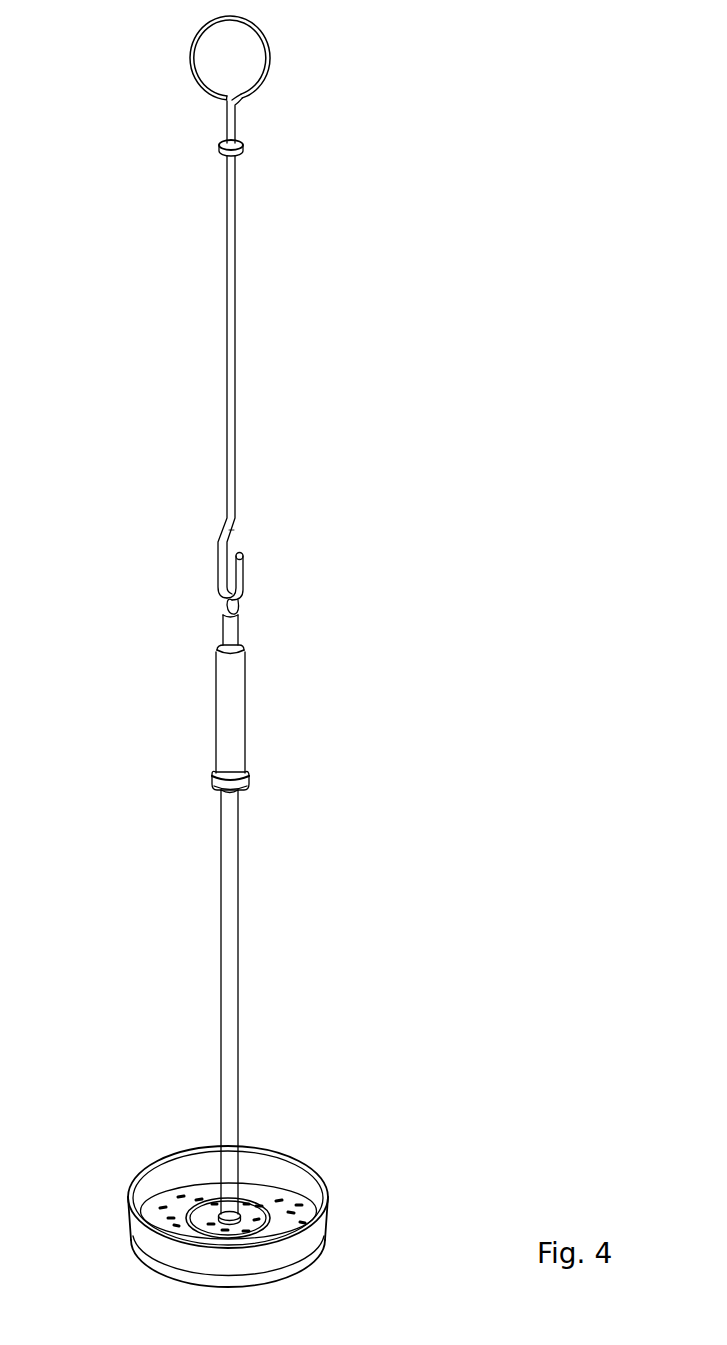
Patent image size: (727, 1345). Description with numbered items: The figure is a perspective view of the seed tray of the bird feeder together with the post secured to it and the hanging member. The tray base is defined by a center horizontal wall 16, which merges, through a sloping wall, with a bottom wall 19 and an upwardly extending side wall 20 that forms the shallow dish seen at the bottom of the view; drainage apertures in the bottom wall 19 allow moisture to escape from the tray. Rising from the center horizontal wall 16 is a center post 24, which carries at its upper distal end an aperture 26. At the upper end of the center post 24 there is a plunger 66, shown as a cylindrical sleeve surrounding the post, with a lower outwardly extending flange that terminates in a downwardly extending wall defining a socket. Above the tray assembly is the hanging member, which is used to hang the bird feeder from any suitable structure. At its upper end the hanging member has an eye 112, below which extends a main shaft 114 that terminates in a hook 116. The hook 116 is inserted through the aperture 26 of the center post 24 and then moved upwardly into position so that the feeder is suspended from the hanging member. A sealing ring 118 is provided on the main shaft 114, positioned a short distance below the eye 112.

The eye 112 is at (268, 52).
The sealing ring 118 is at (243, 148).
The main shaft 114 is at (236, 290).
The hook 116 is at (243, 567).
The aperture 26 is at (251, 599).
The plunger 66 is at (266, 718).
The center post 24 is at (238, 992).
The bottom wall 19 is at (177, 1205).
The center horizontal wall 16 is at (262, 1208).
The side wall 20 is at (327, 1222).